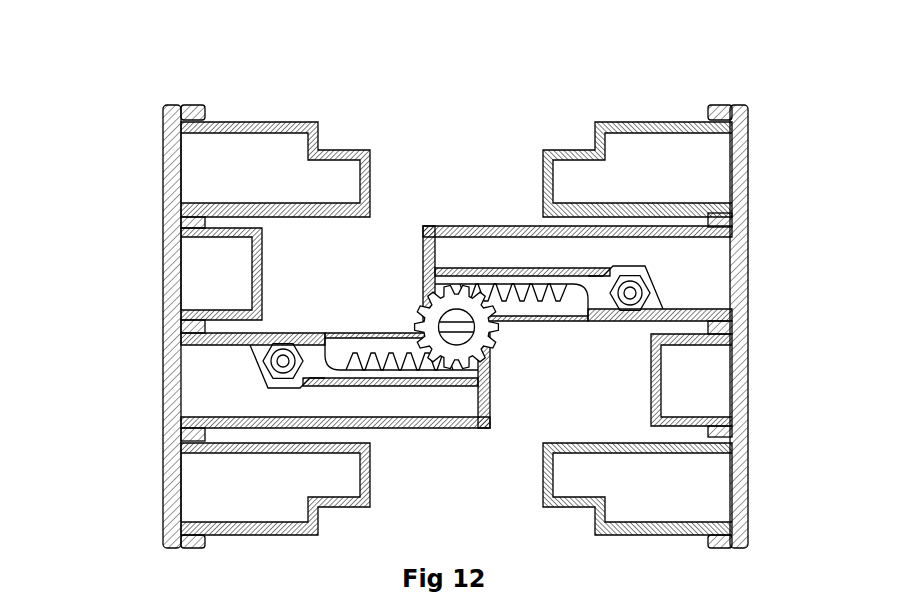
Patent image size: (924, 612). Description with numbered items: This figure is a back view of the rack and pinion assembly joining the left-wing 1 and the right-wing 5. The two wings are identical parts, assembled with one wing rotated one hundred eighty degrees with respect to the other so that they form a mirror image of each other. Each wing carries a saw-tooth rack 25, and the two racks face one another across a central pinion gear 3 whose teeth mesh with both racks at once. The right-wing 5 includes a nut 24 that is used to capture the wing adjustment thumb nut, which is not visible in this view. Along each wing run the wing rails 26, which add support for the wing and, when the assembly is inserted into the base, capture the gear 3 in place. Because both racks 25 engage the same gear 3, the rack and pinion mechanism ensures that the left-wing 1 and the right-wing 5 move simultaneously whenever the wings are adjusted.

The left-wing 1 is at (750, 132).
The gear 3 is at (447, 300).
The right-wing 5 is at (162, 143).
The nut 24 is at (277, 342).
The rack 25 is at (545, 288).
The wing rails 26 is at (695, 528).